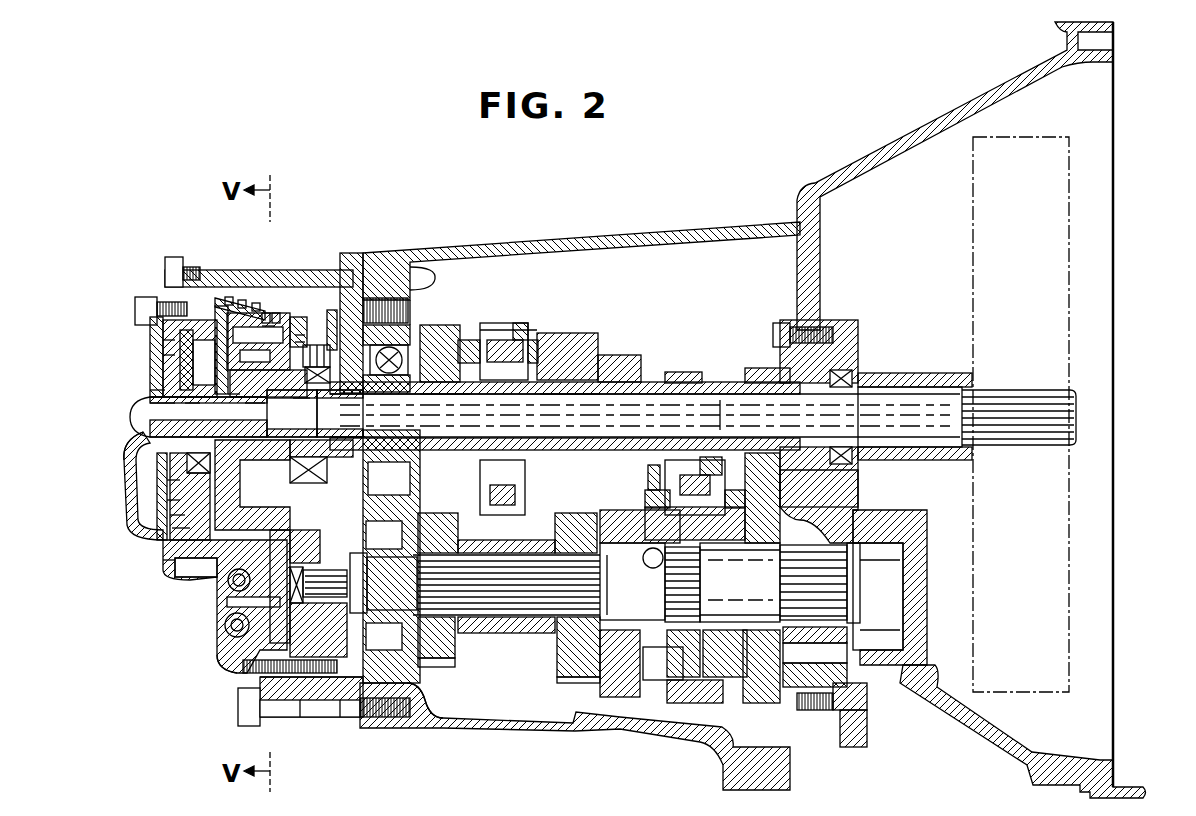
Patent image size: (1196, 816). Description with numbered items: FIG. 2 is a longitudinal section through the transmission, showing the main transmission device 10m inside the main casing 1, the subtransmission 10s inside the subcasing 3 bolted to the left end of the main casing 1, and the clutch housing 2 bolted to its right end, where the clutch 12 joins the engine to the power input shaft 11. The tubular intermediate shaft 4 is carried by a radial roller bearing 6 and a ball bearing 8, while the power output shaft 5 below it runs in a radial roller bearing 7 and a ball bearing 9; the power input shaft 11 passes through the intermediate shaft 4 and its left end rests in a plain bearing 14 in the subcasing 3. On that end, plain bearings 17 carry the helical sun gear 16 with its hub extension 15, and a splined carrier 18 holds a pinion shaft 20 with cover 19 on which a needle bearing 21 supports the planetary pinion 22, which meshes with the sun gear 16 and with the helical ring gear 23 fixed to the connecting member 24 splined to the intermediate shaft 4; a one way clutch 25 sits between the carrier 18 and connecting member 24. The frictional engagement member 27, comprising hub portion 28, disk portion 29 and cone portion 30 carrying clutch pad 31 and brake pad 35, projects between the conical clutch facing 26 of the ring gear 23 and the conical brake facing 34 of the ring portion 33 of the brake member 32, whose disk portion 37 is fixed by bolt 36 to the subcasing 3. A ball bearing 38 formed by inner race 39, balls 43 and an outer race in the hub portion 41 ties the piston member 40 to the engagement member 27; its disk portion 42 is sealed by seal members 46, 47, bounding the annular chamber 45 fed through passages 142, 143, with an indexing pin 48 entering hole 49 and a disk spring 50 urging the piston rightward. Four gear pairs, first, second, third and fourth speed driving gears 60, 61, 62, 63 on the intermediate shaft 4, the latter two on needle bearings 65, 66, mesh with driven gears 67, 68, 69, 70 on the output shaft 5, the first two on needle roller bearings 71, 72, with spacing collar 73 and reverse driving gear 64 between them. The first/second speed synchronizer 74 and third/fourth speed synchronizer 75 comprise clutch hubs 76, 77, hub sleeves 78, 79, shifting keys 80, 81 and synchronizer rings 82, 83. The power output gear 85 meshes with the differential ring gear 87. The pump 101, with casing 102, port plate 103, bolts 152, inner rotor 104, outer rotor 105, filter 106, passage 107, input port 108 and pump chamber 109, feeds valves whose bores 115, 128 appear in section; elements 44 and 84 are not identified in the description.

The main casing 1 is at (597, 250).
The clutch housing 2 is at (884, 160).
The subcasing 3 is at (330, 268).
The tubular intermediate shaft 4 is at (737, 383).
The power output shaft 5 is at (525, 608).
The radial roller bearing 6 is at (843, 367).
The radial roller bearing 7 is at (895, 512).
The ball bearing 8 is at (402, 332).
The ball bearing 9 is at (320, 537).
The subtransmission 10s is at (314, 305).
The main transmission device 10m is at (645, 352).
The power input shaft 11 is at (708, 405).
The clutch 12 is at (972, 223).
The plain bearing 14 is at (142, 455).
The hub extension 15 is at (158, 470).
The helically cut sun gear 16 is at (292, 413).
The plain bearings 17 is at (208, 413).
The carrier 18 is at (316, 348).
The cover 19 is at (296, 318).
The pinion shaft 20 is at (305, 342).
The needle bearing 21 is at (298, 372).
The helically cut planetary pinion 22 is at (302, 410).
The helically cut ring gear 23 is at (306, 330).
The connecting member 24 is at (334, 340).
The one way clutch 25 is at (340, 413).
The conical clutch facing 26 is at (270, 327).
The frictional engagement member 27 is at (165, 372).
The tubular hub portion 28 is at (193, 413).
The disk portion 29 is at (215, 300).
The cone portion 30 is at (266, 313).
The annular clutch pad 31 is at (278, 313).
The brake member 32 is at (166, 272).
The ring portion 33 is at (228, 297).
The conical brake facing 34 is at (243, 300).
The annular brake pad 35 is at (257, 303).
The bolt 36 is at (140, 308).
The disk portion 37 is at (150, 335).
The ball bearing 38 is at (268, 355).
The inner race 39 is at (236, 410).
The piston member 40 is at (180, 548).
The hub portion 41 is at (212, 456).
The disk portion 42 is at (165, 502).
The balls 43 is at (222, 408).
The ring 44 is at (160, 486).
The annular chamber 45 is at (178, 530).
The seal member 46 is at (172, 517).
The seal member 47 is at (214, 472).
The indexing pin 48 is at (160, 358).
The hole 49 is at (165, 343).
The disk spring 50 is at (150, 391).
The first speed driving helical gear 60 is at (762, 373).
The second speed driving helical gear 61 is at (620, 362).
The third speed driving helical gear 62 is at (585, 350).
The fourth speed driving helical gear 63 is at (447, 330).
The reverse driving gear 64 is at (685, 378).
The needle bearing 65 is at (568, 396).
The needle bearing 66 is at (448, 396).
The first speed driven helical gear 67 is at (780, 503).
The second speed driven helical gear wheel 68 is at (652, 473).
The third speed driven helical gear wheel 69 is at (560, 510).
The fourth speed driven helical gear wheel 70 is at (450, 523).
The needle roller bearing 71 is at (758, 545).
The needle roller bearing 72 is at (622, 545).
The spacing collar 73 is at (497, 618).
The first/second speed synchronizer 74 is at (722, 702).
The third/fourth speed synchronizer 75 is at (535, 330).
The clutch hub 76 is at (698, 557).
The clutch hub 77 is at (508, 505).
The hub sleeve 78 is at (718, 480).
The hub sleeve 79 is at (521, 326).
The shifting key 80 is at (695, 485).
The shifting key 81 is at (500, 336).
The synchronizer rings 82 is at (694, 490).
The synchronizer rings 83 is at (468, 342).
The shift fork 84 is at (684, 698).
The power output gear 85 is at (830, 520).
The ring gear 87 is at (852, 690).
The rotary hydraulic fluid pressure pump 101 is at (330, 540).
The casing 102 is at (356, 578).
The port plate 103 is at (245, 668).
The inner rotor 104 is at (346, 565).
The outer rotor 105 is at (258, 682).
The filter 106 is at (390, 697).
The hydraulic fluid passage 107 is at (345, 718).
The input port 108 is at (268, 718).
The pump chamber 109 is at (222, 660).
The bore 115 is at (254, 580).
The bore 128 is at (226, 628).
The passage 142 is at (192, 578).
The passage 143 is at (170, 566).
The bolts 152 is at (312, 718).